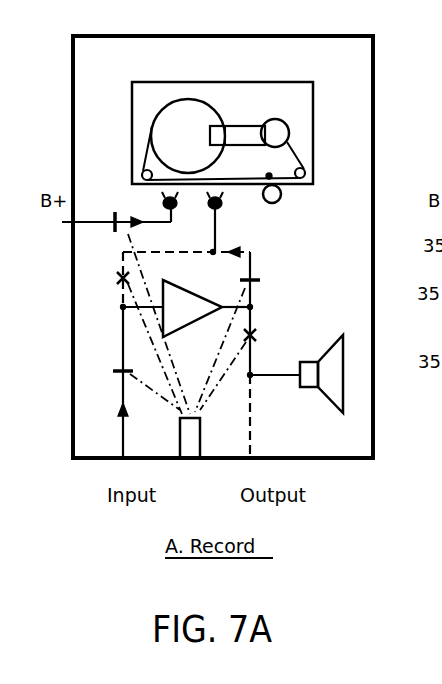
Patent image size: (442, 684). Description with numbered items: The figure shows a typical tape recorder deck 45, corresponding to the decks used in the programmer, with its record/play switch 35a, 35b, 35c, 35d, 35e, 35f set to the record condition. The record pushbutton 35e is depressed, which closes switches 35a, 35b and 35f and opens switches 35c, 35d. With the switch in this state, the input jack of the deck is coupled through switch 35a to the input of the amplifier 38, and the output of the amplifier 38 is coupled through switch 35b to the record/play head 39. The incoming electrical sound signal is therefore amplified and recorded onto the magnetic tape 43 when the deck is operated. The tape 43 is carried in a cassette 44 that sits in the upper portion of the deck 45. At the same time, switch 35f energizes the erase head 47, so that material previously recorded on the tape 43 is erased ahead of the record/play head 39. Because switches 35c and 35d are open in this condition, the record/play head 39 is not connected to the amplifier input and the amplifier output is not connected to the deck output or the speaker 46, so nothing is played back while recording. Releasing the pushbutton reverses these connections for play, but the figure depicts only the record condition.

The switch 35a is at (118, 368).
The switch 35b is at (262, 284).
The switch 35c is at (110, 278).
The switch 35d is at (261, 340).
The record pushbutton 35e is at (221, 426).
The switch 35f is at (107, 230).
The amplifier 38 is at (174, 284).
The record/play head 39 is at (226, 204).
The magnetic tape 43 is at (314, 152).
The tape cassette 44 is at (314, 105).
The tape recorder deck 45 is at (381, 56).
The speaker 46 is at (304, 390).
The erase head 47 is at (150, 197).